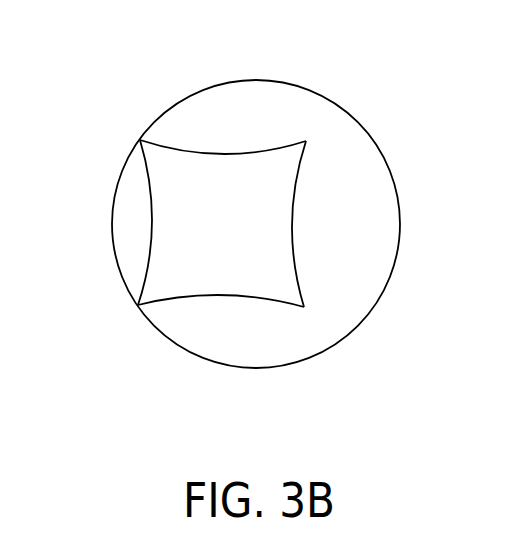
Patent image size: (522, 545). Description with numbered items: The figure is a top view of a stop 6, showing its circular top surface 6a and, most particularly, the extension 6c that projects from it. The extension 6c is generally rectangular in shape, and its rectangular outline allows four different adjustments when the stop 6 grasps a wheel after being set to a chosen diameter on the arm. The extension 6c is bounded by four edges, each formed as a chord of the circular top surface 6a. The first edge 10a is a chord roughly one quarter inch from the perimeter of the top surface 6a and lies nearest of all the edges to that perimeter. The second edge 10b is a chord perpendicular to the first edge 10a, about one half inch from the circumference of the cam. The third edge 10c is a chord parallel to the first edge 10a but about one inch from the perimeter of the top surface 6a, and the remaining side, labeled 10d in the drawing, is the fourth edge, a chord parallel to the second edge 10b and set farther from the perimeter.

The stop 6 is at (124, 57).
The top surface 6a is at (382, 192).
The extension 6c is at (195, 282).
The first edge 10a is at (152, 223).
The second edge 10b is at (223, 295).
The third edge 10c is at (297, 260).
The fourth concave side 10d is at (210, 153).